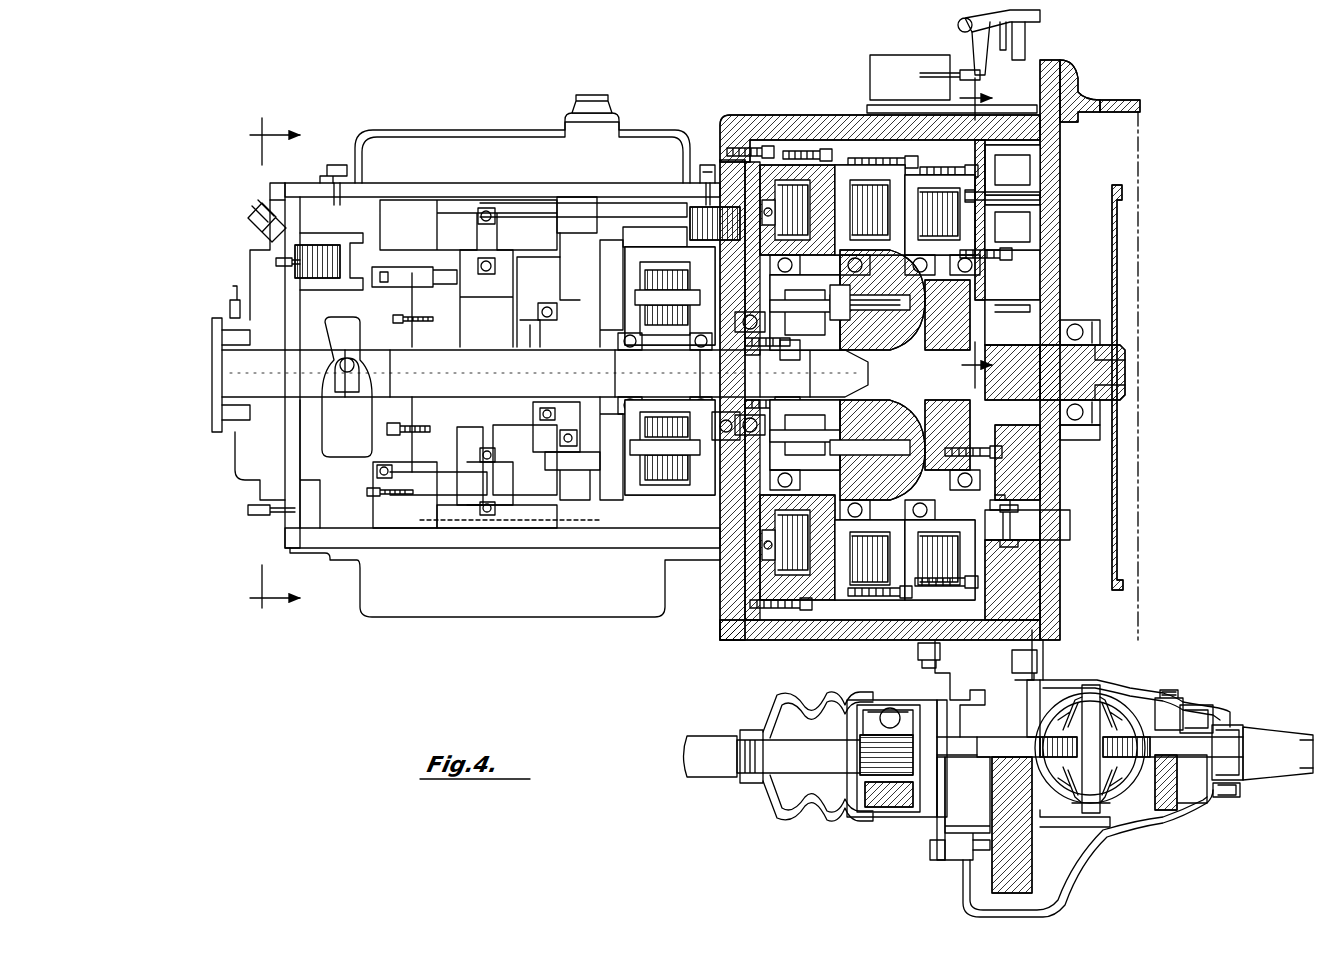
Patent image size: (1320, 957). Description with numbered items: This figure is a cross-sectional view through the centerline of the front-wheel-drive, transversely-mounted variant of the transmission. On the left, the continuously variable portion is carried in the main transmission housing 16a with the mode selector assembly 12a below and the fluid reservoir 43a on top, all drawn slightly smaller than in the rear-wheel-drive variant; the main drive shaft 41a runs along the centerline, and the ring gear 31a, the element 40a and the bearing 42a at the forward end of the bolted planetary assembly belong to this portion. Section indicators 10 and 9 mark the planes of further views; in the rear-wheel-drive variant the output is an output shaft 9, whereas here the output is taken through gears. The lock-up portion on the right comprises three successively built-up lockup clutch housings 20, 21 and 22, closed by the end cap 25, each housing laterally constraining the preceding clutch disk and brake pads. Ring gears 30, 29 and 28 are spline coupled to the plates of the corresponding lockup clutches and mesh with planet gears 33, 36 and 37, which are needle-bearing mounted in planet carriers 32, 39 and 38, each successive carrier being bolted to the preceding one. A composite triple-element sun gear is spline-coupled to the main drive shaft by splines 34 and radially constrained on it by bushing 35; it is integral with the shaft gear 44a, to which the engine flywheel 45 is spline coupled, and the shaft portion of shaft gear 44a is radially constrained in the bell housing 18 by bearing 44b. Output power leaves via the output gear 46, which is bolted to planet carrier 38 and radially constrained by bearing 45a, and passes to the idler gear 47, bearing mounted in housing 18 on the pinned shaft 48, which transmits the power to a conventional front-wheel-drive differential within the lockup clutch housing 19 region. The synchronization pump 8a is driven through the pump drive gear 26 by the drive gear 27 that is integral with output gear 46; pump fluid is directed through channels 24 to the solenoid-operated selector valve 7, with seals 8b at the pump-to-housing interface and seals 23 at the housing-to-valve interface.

The solenoid-operated selector valve 7 is at (965, 45).
The synchronization pump 8a is at (1045, 210).
The seal 8b is at (1040, 182).
The output shaft 9 is at (1035, 114).
The section line 10 is at (338, 638).
The mode selector assembly 12a is at (440, 617).
The main transmission housing 16a is at (425, 548).
The bell housing 18 is at (1140, 100).
The lockup clutch housing 19 is at (918, 652).
The lockup clutch housing 20 is at (783, 140).
The lockup clutch housing 21 is at (860, 160).
The lockup clutch housing 22 is at (930, 160).
The seal 23 is at (1042, 62).
The channel 24 is at (1072, 85).
The end cap 25 is at (955, 170).
The pump drive gear 26 is at (985, 258).
The drive gear 27 is at (1010, 512).
The ring gear 28 is at (885, 560).
The ring gear 29 is at (790, 600).
The ring gear 30 is at (745, 450).
The gear 31a is at (660, 500).
The planet carrier 32 is at (750, 400).
The planet gear 33 is at (825, 340).
The spline 34 is at (783, 377).
The bushing 35 is at (840, 375).
The planet gear 36 is at (870, 320).
The planet gear 37 is at (930, 345).
The planet carrier 38 is at (958, 446).
The planet carrier 39 is at (905, 430).
The gear 40a is at (715, 342).
The main drive shaft 41a is at (580, 470).
The bearing 42a is at (740, 440).
The fluid reservoir 43a is at (480, 130).
The shaft gear 44a is at (1120, 380).
The bearing 44b is at (1075, 413).
The engine flywheel 45 is at (1140, 270).
The bearing 45a is at (1085, 325).
The output gear 46 is at (1010, 305).
The idler gear 47 is at (1035, 465).
The pinned shaft 48 is at (1040, 520).